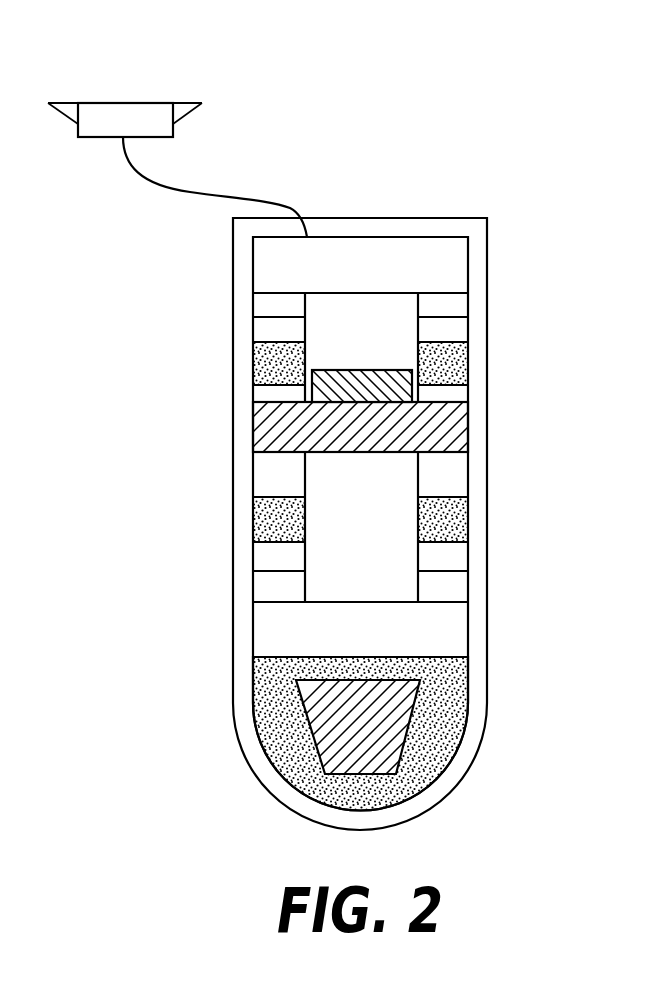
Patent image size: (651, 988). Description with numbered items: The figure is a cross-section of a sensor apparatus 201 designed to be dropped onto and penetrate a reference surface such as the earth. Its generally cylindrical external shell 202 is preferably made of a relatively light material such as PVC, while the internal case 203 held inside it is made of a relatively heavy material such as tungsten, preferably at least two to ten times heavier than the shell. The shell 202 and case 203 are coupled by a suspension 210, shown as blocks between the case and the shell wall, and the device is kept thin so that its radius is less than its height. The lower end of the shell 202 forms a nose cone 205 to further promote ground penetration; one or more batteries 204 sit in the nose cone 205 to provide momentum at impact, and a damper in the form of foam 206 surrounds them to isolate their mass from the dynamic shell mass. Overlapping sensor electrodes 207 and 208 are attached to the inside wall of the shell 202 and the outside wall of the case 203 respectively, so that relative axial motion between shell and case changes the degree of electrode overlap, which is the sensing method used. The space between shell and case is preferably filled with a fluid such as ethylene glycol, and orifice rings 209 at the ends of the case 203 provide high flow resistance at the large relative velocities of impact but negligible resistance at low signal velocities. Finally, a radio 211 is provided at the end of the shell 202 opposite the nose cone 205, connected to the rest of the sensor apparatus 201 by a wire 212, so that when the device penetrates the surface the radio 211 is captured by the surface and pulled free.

The sensor apparatus 201 is at (208, 408).
The external shell 202 is at (486, 298).
The internal case 203 is at (365, 293).
The batteries 204 is at (390, 750).
The nose cone 205 is at (464, 724).
The foam 206 is at (278, 743).
The sensor electrode 207 is at (468, 431).
The sensor electrode 208 is at (418, 378).
The orifice rings 209 is at (253, 300).
The suspension 210 is at (253, 355).
The radio 211 is at (121, 103).
The wire 212 is at (180, 192).